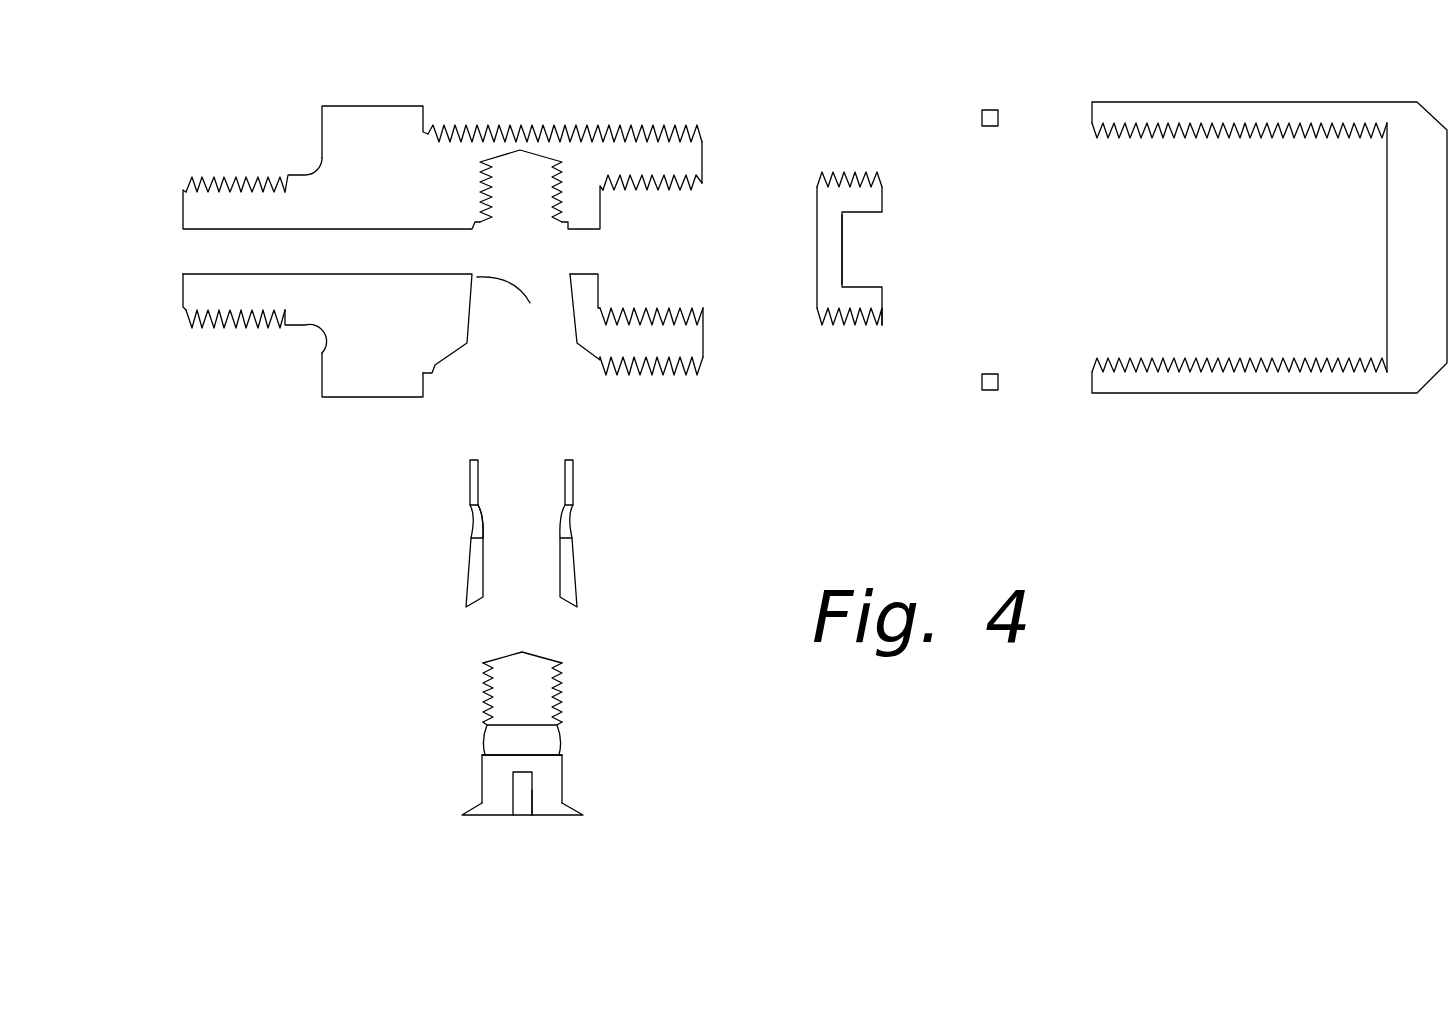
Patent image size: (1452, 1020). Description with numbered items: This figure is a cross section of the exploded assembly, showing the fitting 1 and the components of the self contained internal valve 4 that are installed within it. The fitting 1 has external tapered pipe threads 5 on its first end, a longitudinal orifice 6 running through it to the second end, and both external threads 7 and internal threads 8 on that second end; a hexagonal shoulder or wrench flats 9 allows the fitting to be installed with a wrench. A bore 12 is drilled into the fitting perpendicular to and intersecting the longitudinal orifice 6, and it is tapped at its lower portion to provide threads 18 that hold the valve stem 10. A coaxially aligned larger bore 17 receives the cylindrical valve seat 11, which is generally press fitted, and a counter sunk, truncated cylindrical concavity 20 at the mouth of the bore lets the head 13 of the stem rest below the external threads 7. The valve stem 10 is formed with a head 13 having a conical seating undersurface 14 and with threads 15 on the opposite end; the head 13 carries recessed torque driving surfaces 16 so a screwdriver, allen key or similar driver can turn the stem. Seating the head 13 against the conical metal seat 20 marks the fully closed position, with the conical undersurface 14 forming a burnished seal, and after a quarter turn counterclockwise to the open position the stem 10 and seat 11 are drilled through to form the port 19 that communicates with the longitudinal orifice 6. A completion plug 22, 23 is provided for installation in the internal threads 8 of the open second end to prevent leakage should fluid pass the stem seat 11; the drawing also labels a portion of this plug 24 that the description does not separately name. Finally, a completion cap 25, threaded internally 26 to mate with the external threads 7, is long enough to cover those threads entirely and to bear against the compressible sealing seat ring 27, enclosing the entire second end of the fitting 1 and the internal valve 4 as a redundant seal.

The fitting 1 is at (283, 141).
The self contained internal valve 4 is at (528, 697).
The external tapered pipe threads 5 is at (252, 322).
The longitudinal orifice 6 is at (182, 255).
The external threads 7 is at (647, 375).
The internal threads 8 is at (660, 190).
The hexagonal shoulder or wrench flats 9 is at (383, 120).
The valve stem 10 is at (553, 760).
The cylindrical valve seat 11 is at (465, 565).
The bore 12 is at (520, 177).
The head 13 is at (527, 812).
The conical seating undersurface 14 is at (473, 805).
The threads 15 is at (497, 710).
The recessed torque driving surfaces 16 is at (538, 793).
The larger bore 17 is at (511, 309).
The threads 18 is at (568, 185).
The port 19 is at (455, 513).
The counter sunk truncated cylindrical concavity 20 is at (587, 355).
The completion plug 22 is at (888, 192).
The ring thread 23 is at (838, 172).
The groove 24 is at (865, 280).
The completion cap 25 is at (1190, 110).
The internal threads of completion cap 26 is at (1200, 140).
The compressible sealing seat ring 27 is at (1000, 390).